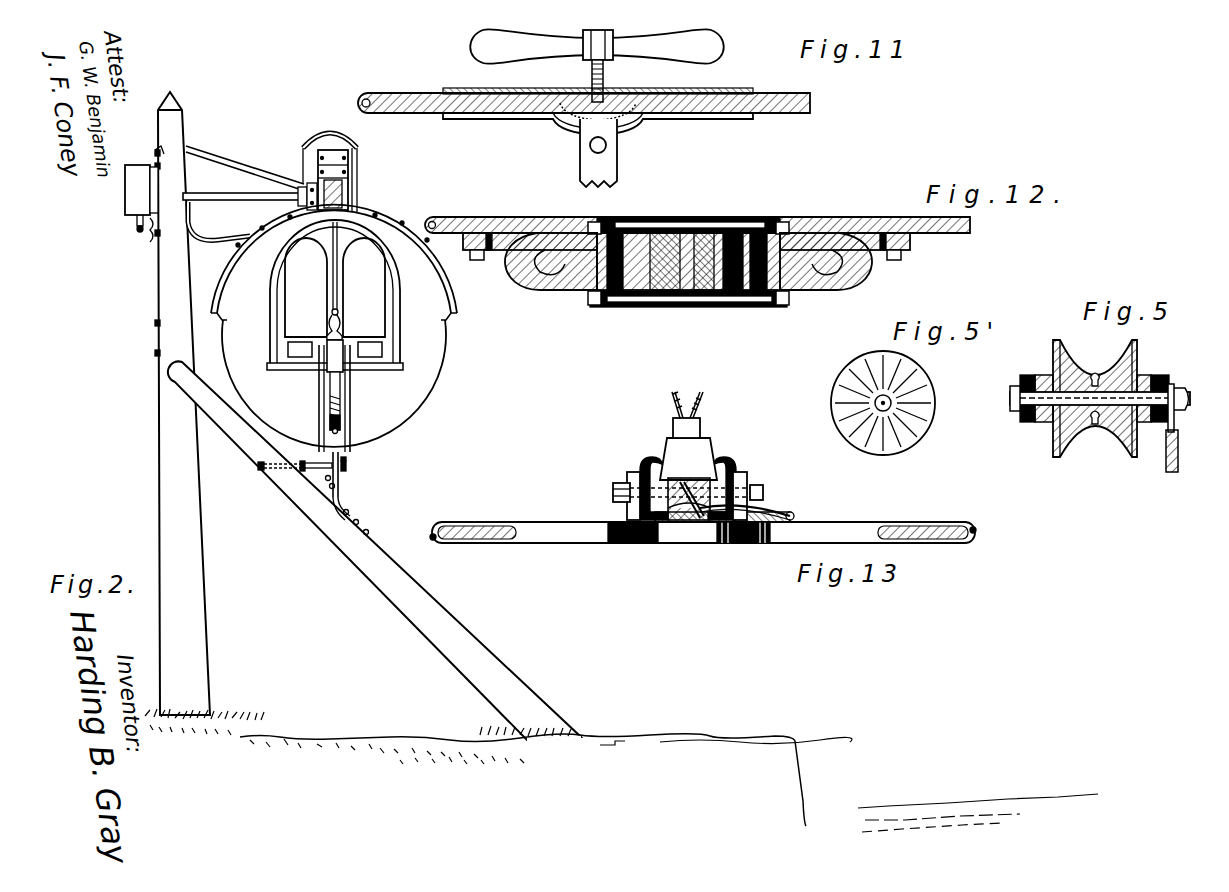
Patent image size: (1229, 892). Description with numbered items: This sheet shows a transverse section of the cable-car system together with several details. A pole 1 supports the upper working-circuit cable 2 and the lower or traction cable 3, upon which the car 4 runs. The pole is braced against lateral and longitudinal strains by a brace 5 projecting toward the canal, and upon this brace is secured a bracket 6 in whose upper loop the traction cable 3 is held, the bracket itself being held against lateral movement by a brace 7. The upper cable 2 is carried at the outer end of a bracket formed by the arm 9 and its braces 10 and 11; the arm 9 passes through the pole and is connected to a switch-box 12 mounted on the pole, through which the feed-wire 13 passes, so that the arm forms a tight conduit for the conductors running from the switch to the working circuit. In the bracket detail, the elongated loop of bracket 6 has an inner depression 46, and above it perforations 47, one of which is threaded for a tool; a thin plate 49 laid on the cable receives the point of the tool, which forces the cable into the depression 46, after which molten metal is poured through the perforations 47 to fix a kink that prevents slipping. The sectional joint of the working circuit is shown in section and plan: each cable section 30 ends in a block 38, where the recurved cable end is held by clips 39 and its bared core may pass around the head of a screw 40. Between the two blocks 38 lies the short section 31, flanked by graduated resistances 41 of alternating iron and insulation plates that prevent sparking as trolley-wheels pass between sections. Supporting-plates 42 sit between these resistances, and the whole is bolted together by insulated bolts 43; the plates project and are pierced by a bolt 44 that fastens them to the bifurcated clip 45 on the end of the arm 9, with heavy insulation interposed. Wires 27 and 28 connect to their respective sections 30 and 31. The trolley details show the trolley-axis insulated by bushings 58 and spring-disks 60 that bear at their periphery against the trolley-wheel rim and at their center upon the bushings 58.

In FIG. 2, the pole 1 is at (182, 403).
In FIG. 2, the upper cable 2 is at (323, 172).
In FIG. 2, the lower cable 3 is at (345, 423).
In FIG. 2, the car 4 is at (334, 326).
In FIG. 2, the brace 5 is at (374, 550).
In FIG. 2, the bracket 6 is at (340, 470).
In FIG. 11, the bracket 6 is at (580, 160).
In FIG. 2, the brace 7 is at (302, 457).
In FIG. 2, the arm 9 is at (250, 192).
In FIG. 13, the arm 9 is at (700, 428).
In FIG. 2, the brace 10 is at (229, 166).
In FIG. 2, the brace 11 is at (219, 221).
In FIG. 2, the switch-box 12 is at (125, 188).
In FIG. 2, the feed-wire 13 is at (139, 232).
In FIG. 13, the wire 27 is at (708, 402).
In FIG. 13, the wire 28 is at (674, 404).
In FIG. 12, the section 30 is at (978, 244).
In FIG. 13, the section 30 is at (703, 522).
In FIG. 12, the short section 31 is at (665, 232).
In FIG. 13, the short section 31 is at (689, 543).
In FIG. 12, the block 38 is at (691, 206).
In FIG. 13, the block 38 is at (565, 545).
In FIG. 12, the clip 39 is at (685, 267).
In FIG. 12, the screw 40 is at (476, 261).
In FIG. 12, the graduated resistance 41 is at (783, 312).
In FIG. 12, the supporting-plate 42 is at (693, 321).
In FIG. 13, the supporting-plate 42 is at (628, 479).
In FIG. 12, the bolt 43 is at (716, 230).
In FIG. 13, the bolt 43 is at (717, 489).
In FIG. 13, the bolt 44 is at (612, 493).
In FIG. 13, the bifurcated clip 45 is at (725, 479).
In FIG. 11, the depression 46 is at (630, 120).
In FIG. 11, the perforation 47 is at (622, 95).
In FIG. 11, the plate 49 is at (586, 96).
In FIG. 5, the bushing 58 is at (1020, 420).
In FIG. 5', the spring-disk 60 is at (920, 382).
In FIG. 5, the spring-disk 60 is at (1055, 360).